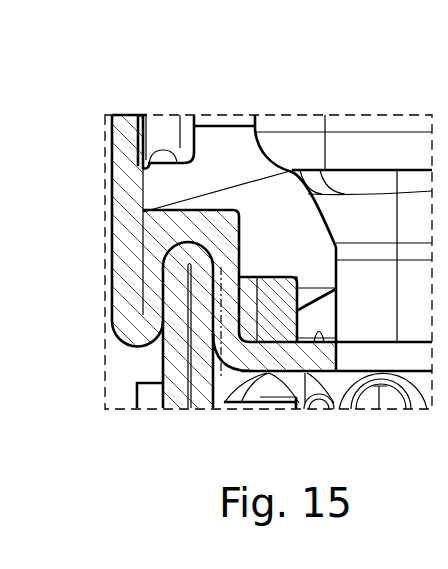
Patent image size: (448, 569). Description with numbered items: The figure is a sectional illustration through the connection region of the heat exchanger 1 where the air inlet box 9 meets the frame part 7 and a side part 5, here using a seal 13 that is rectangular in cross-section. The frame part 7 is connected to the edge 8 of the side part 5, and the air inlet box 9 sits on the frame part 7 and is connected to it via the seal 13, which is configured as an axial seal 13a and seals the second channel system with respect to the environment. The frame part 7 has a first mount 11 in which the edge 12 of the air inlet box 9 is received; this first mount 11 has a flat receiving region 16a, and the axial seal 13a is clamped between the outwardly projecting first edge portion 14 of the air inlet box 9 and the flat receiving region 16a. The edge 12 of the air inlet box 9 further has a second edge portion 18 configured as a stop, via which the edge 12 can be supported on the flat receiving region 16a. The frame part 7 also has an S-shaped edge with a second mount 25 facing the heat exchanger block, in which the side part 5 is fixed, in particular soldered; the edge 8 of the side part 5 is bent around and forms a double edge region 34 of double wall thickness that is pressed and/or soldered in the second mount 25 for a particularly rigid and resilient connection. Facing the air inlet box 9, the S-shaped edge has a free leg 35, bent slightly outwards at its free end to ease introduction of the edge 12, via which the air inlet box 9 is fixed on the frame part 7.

The heat exchanger 1 is at (336, 324).
The side part 5 is at (177, 398).
The frame part 7 is at (96, 289).
The edge of the side part 8 is at (180, 373).
The air inlet box 9 is at (320, 109).
The first mount 11 is at (220, 392).
The edge of the air inlet box 12 is at (241, 114).
The seal 13 is at (278, 277).
The axial seal 13a is at (324, 338).
The first edge portion 14 is at (143, 193).
The flat receiving region 16a is at (321, 332).
The second edge portion 18 is at (324, 308).
The second mount 25 is at (191, 253).
The double edge region 34 is at (175, 290).
The free leg 35 is at (112, 143).